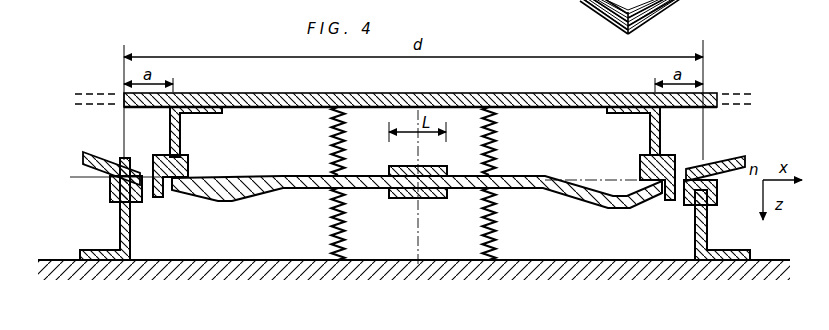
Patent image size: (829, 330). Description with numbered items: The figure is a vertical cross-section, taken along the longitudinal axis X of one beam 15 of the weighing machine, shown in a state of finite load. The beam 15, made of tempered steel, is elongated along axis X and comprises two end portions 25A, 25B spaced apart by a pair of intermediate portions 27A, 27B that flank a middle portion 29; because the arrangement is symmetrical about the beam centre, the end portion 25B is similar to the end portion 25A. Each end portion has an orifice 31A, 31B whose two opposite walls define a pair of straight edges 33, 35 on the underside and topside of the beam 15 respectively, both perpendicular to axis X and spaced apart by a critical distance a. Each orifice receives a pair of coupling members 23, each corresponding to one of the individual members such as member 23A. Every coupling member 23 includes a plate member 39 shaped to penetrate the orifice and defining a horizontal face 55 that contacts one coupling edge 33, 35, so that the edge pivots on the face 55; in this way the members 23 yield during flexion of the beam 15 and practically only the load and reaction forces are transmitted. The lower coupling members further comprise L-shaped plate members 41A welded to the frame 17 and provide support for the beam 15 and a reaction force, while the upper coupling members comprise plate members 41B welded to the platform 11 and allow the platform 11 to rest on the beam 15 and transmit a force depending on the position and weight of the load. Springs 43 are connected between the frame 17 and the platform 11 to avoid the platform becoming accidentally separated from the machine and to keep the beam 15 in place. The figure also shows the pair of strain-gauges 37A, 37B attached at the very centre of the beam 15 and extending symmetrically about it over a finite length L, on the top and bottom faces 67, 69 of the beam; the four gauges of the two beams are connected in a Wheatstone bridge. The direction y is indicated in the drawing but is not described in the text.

The platform 11 is at (333, 94).
The beam 15 is at (287, 175).
The frame 17 is at (177, 260).
The coupling member 23 is at (210, 142).
The coupling member 23A is at (583, 2).
The end portion 25A is at (200, 223).
The end portion 25B is at (659, 215).
The intermediate portion 27A is at (255, 198).
The intermediate portion 27B is at (578, 204).
The middle portion 29 is at (396, 225).
The orifice 31A is at (172, 184).
The orifice 31B is at (688, 162).
The straight edge 33 is at (122, 163).
The straight edge 35 is at (192, 181).
The strain-gauge 37A is at (392, 165).
The strain-gauge 37B is at (424, 199).
The plate member 39 is at (188, 157).
The plate member 41A is at (415, 209).
The plate member 41B is at (170, 132).
The spring 43 is at (332, 128).
The horizontal face 55 is at (130, 177).
The top face 67 is at (450, 172).
The bottom face 69 is at (359, 190).
The direction y is at (266, 148).